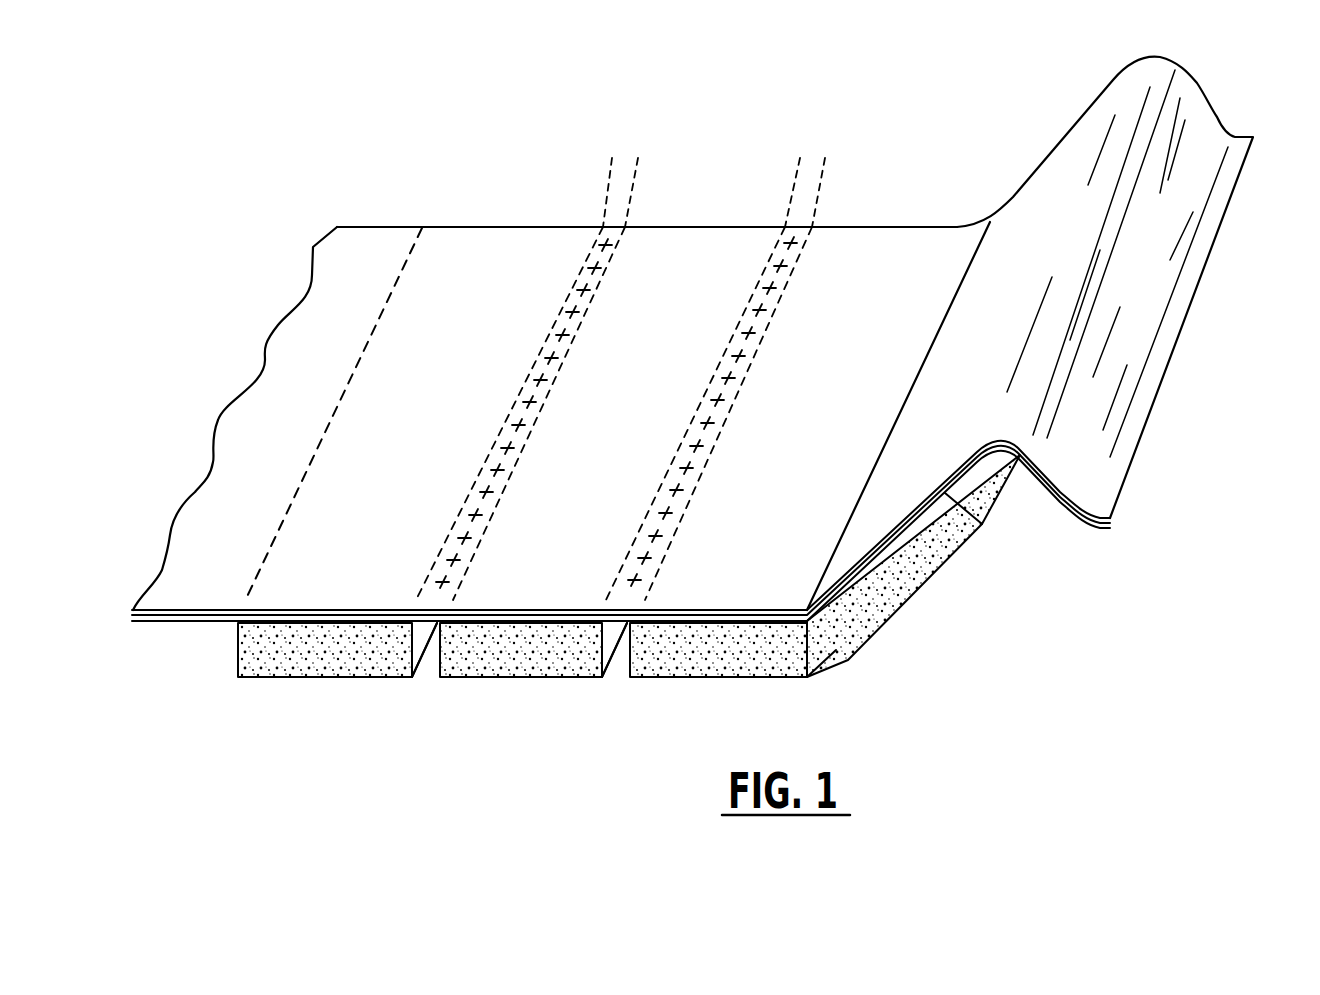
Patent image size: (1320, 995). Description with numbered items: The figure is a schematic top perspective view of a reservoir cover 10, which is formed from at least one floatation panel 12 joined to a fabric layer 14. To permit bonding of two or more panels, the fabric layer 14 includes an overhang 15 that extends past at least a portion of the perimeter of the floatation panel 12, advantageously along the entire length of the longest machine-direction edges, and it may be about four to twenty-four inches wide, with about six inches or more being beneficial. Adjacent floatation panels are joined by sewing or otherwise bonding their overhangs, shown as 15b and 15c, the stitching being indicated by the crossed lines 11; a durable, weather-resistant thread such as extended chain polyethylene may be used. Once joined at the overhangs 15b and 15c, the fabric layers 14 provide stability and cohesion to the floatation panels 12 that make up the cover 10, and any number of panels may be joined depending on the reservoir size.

The reservoir cover 10 is at (923, 124).
The crossed lines 11 is at (545, 357).
The floatation panel 12 is at (327, 653).
The fabric layer 14 is at (1155, 288).
The overhang 15 is at (233, 630).
The overhang of first adjacent floatation panel 15b is at (611, 159).
The overhang of second adjacent floatation panel 15c is at (640, 160).